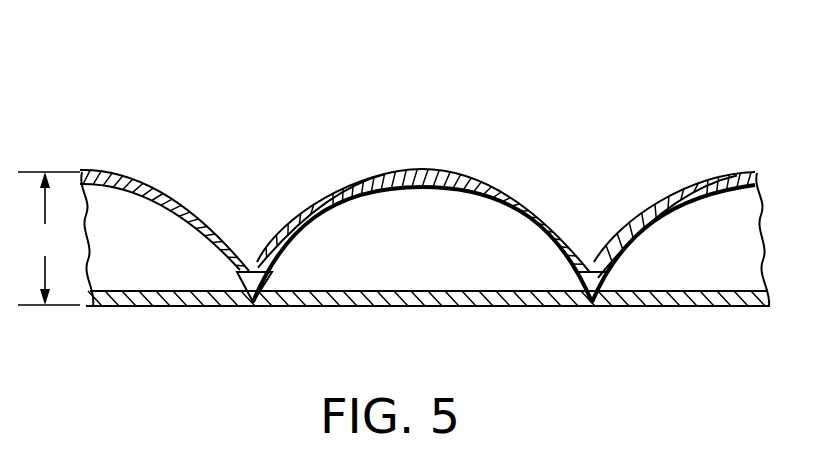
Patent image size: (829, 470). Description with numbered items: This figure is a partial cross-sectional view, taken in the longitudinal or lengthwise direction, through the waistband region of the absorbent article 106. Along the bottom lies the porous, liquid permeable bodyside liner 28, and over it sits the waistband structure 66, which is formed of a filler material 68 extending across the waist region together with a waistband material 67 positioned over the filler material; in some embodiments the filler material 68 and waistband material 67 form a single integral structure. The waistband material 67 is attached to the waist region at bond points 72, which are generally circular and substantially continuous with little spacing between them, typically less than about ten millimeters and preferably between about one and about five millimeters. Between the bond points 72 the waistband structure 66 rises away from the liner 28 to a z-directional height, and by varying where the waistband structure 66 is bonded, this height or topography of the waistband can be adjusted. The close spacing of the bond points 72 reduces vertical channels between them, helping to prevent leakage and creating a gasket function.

The cushion assembly 106 is at (123, 62).
The waistband structure 66 is at (227, 154).
The waistband material 67 is at (470, 175).
The filler material 68 is at (386, 220).
The bond points 72 is at (253, 257).
The bodyside liner 28 is at (384, 298).